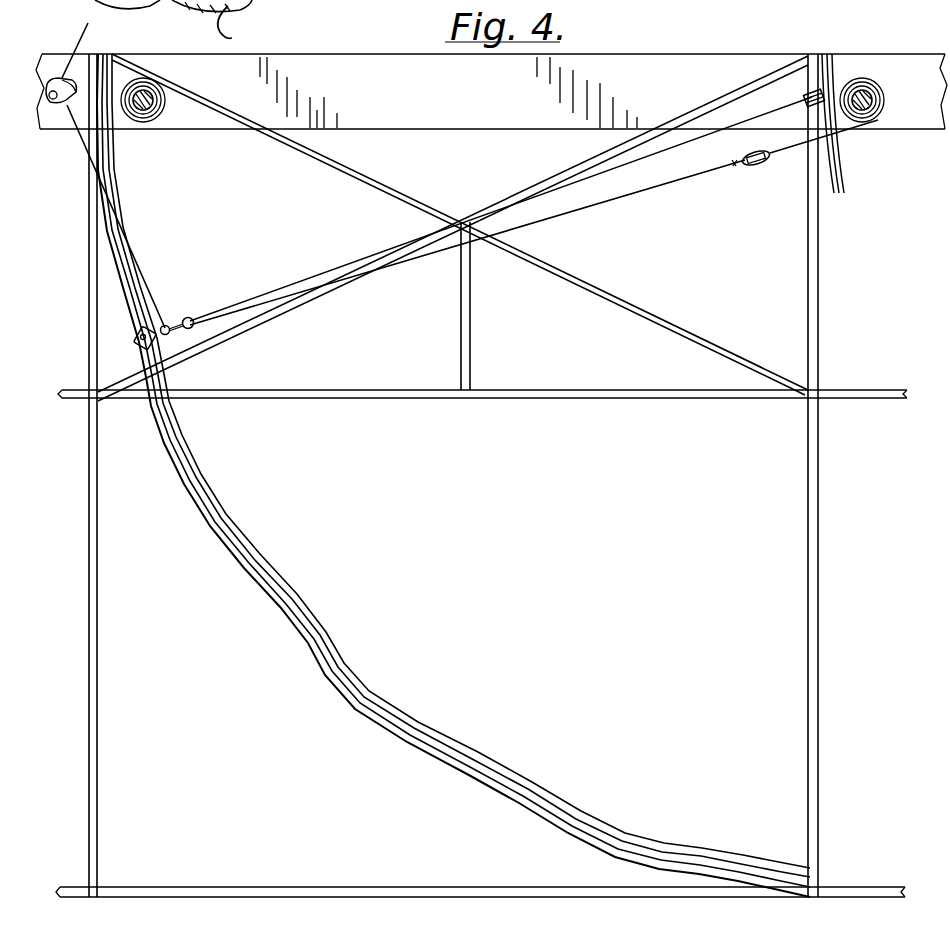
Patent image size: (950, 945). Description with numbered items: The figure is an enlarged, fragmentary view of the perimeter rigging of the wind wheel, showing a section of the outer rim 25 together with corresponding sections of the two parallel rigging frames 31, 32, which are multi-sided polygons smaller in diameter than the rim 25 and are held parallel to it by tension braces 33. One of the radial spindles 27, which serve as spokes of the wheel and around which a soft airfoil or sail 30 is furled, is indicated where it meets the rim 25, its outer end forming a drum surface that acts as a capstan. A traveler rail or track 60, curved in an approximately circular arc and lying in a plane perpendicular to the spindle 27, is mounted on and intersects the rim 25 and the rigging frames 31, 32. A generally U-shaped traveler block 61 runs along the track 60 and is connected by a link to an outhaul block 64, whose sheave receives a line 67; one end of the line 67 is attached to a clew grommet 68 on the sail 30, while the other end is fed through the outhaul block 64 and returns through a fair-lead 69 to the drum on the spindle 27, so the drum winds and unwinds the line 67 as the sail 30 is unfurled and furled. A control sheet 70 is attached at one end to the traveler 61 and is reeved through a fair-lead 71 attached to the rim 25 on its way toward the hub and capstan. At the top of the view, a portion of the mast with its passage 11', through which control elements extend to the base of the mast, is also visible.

The passage in mast 11' is at (242, 29).
The outer rim 25 is at (628, 76).
The radial spindle 27 is at (153, 106).
The soft airfoil 30 is at (797, 150).
The rigging frame 31 is at (578, 400).
The rigging frame 32 is at (366, 886).
The tension brace 33 is at (563, 265).
The traveler rail 60 is at (333, 654).
The traveler block 61 is at (153, 344).
The outhaul block 64 is at (185, 316).
The line 67 is at (616, 204).
The clew grommet 68 is at (762, 168).
The fair-lead 69 is at (808, 92).
The control sheet 70 is at (78, 50).
The fair-lead 71 is at (68, 106).